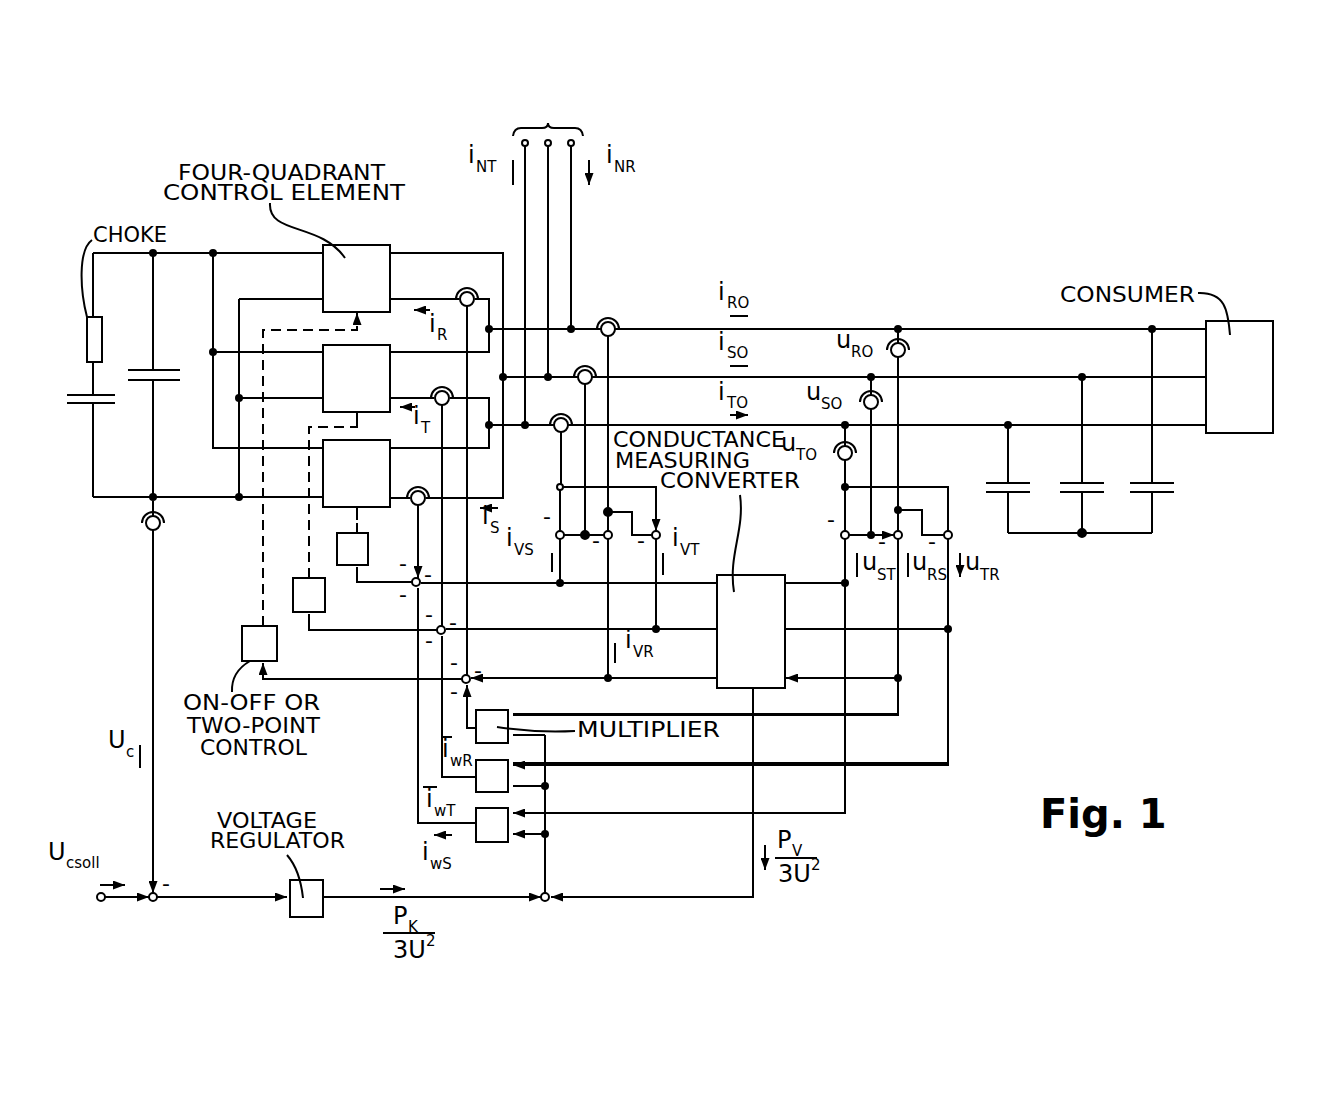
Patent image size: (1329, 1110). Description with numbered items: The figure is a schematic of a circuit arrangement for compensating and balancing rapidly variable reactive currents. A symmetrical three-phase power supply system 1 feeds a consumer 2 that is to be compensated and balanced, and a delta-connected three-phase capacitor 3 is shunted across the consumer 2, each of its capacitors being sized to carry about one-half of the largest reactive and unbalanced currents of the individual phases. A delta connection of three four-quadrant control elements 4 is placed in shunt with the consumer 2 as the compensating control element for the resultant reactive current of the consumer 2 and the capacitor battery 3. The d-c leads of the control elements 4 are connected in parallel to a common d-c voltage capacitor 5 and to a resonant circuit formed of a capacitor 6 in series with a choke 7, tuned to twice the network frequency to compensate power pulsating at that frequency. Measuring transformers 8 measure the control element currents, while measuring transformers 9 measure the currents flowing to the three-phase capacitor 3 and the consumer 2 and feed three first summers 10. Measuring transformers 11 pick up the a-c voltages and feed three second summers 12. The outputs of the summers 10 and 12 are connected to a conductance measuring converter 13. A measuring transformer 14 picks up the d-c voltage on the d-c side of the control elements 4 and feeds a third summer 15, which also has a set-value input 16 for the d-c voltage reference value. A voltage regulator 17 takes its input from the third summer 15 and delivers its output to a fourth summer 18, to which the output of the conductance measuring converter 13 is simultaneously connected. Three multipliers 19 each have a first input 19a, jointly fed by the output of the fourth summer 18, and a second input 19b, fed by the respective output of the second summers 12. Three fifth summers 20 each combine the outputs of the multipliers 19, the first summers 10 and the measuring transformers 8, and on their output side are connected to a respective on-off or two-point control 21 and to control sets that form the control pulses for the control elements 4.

The three-phase power supply system 1 is at (548, 123).
The consumer 2 is at (1273, 375).
The three-phase capacitor 3 is at (1140, 482).
The four-quadrant control element 4 is at (373, 245).
The d-c voltage capacitor 5 is at (162, 372).
The capacitor 6 is at (88, 395).
The choke 7 is at (86, 338).
The measuring transformer 8 is at (466, 291).
The measuring transformer 9 is at (613, 318).
The first summer 10 is at (556, 534).
The measuring transformer 11 is at (906, 345).
The second summer 12 is at (902, 512).
The conductance measuring converter 13 is at (765, 575).
The measuring transformer 14 is at (142, 520).
The third summer 15 is at (155, 902).
The set-value input 16 is at (99, 902).
The voltage regulator 17 is at (313, 917).
The fourth summer 18 is at (545, 902).
The multiplier 19 is at (488, 710).
The first input 19a is at (530, 739).
The second input 19b is at (540, 713).
The fifth summer 20 is at (411, 585).
The on-off or two-point control 21 is at (337, 550).